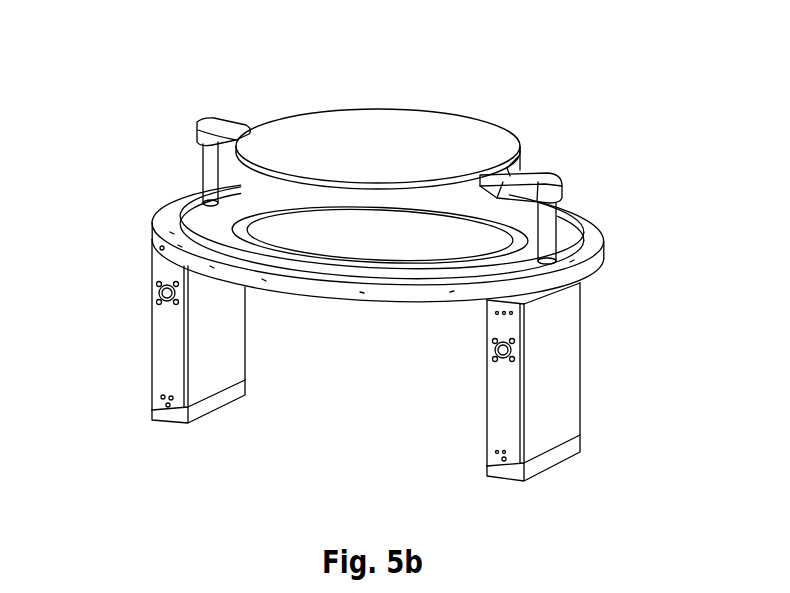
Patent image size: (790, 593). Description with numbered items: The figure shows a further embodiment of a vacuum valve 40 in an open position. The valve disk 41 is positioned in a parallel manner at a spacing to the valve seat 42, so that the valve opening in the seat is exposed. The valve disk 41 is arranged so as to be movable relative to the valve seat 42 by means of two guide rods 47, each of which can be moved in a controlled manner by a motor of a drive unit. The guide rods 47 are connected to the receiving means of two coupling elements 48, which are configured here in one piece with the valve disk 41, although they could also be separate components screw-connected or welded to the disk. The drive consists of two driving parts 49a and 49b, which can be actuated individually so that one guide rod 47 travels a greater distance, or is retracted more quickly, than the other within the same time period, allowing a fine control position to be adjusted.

The vacuum valve 40 is at (247, 63).
The valve disk 41 is at (370, 127).
The valve seat 42 is at (207, 223).
The guide rods 47 is at (210, 183).
The coupling elements 48 is at (223, 123).
The driving part 49a is at (232, 352).
The driving part 49b is at (568, 393).